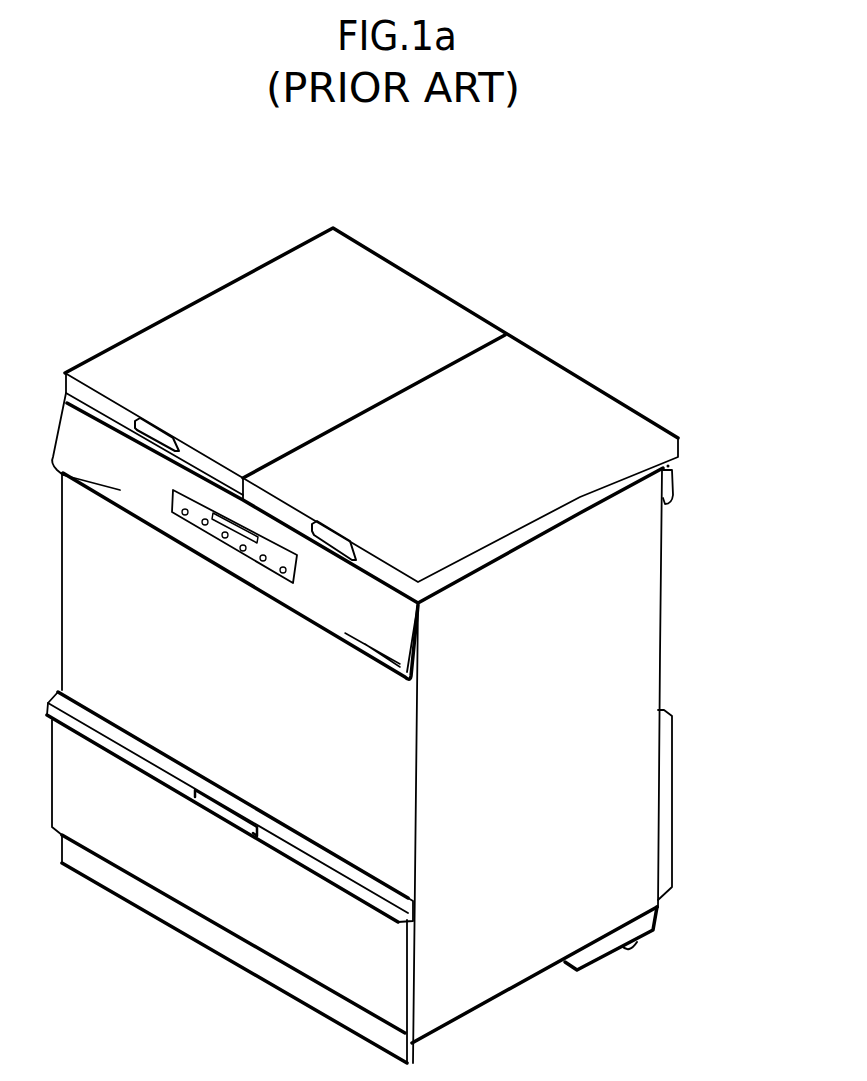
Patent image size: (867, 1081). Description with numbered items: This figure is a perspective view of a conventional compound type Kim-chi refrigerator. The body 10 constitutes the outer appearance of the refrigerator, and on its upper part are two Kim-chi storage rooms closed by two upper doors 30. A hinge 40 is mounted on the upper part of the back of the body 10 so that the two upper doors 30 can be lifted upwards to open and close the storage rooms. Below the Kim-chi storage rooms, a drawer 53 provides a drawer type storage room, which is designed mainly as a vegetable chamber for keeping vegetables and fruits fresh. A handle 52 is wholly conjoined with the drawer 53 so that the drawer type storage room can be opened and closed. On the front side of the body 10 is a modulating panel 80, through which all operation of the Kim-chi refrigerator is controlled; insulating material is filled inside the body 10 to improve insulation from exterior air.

The body 10 is at (648, 655).
The upper door 30 is at (448, 328).
The hinge 40 is at (673, 460).
The handle 52 is at (257, 833).
The drawer 53 is at (280, 915).
The modulating panel 80 is at (243, 553).